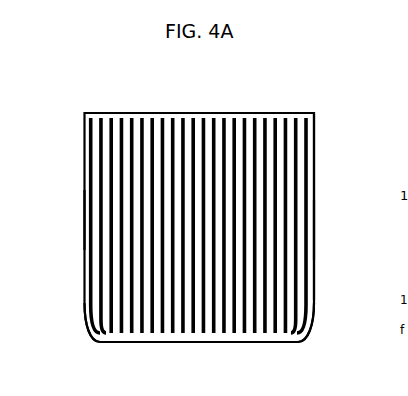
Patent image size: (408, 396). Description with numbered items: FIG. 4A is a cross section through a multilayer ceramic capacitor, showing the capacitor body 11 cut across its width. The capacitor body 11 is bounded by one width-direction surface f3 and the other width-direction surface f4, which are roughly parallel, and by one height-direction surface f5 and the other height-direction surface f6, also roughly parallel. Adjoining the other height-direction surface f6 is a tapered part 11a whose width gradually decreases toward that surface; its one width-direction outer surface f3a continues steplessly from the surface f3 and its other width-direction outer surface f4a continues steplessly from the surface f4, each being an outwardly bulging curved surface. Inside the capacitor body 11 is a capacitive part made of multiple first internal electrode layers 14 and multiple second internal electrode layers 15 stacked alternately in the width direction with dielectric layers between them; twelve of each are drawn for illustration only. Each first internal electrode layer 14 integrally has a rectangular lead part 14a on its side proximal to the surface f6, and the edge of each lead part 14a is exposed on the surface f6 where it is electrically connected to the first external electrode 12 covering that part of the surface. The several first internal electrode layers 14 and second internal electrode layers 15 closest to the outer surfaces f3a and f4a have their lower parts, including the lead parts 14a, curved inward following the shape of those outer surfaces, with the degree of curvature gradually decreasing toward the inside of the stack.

The capacitor body 11 is at (84, 192).
The tapered part 11a is at (86, 323).
The first external electrode 12 is at (195, 344).
The first internal electrode layer 14 is at (313, 113).
The lead part 14a is at (300, 344).
The second internal electrode layer 15 is at (281, 113).
The one width-direction surface f3 is at (316, 243).
The one width-direction outer surface f3a is at (310, 332).
The other width-direction surface f4 is at (84, 247).
The other width-direction outer surface f4a is at (86, 334).
The one height-direction surface f5 is at (187, 113).
The other height-direction surface f6 is at (222, 344).